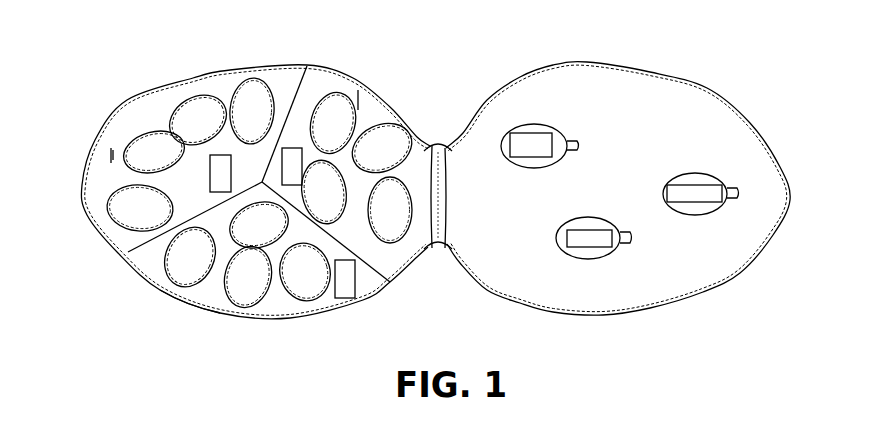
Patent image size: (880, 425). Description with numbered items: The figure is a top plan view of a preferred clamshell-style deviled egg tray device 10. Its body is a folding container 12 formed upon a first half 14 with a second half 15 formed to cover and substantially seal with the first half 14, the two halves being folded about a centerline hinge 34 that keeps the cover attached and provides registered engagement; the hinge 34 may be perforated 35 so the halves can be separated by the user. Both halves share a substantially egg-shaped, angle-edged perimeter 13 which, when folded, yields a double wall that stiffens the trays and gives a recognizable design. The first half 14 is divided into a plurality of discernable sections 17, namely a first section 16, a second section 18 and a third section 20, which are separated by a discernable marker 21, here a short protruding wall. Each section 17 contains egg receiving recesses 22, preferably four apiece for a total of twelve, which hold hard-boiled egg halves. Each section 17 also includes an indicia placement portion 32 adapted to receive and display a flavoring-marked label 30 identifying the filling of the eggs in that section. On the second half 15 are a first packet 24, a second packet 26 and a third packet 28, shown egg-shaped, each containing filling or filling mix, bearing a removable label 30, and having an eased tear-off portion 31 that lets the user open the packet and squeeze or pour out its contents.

The device 10 is at (697, 62).
The folding container 12 is at (353, 78).
The perimeter 13 is at (230, 70).
The first half 14 is at (192, 300).
The second half 15 is at (702, 287).
The first section 16 is at (162, 125).
The sections 17 is at (105, 175).
The second section 18 is at (373, 118).
The third section 20 is at (280, 290).
The discernable marker 21 is at (126, 252).
The egg receiving recesses 22 is at (110, 208).
The first packet 24 is at (553, 135).
The second packet 26 is at (683, 173).
The third packet 28 is at (557, 235).
The label 30 is at (537, 152).
The tear-off portion 31 is at (580, 143).
The indicia placement portion 32 is at (210, 170).
The centerline hinge 34 is at (434, 142).
The perforation 35 is at (438, 224).